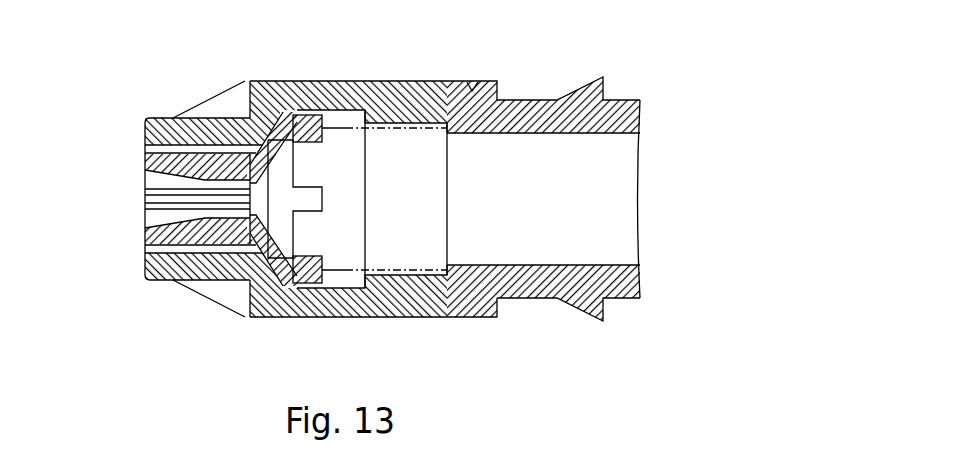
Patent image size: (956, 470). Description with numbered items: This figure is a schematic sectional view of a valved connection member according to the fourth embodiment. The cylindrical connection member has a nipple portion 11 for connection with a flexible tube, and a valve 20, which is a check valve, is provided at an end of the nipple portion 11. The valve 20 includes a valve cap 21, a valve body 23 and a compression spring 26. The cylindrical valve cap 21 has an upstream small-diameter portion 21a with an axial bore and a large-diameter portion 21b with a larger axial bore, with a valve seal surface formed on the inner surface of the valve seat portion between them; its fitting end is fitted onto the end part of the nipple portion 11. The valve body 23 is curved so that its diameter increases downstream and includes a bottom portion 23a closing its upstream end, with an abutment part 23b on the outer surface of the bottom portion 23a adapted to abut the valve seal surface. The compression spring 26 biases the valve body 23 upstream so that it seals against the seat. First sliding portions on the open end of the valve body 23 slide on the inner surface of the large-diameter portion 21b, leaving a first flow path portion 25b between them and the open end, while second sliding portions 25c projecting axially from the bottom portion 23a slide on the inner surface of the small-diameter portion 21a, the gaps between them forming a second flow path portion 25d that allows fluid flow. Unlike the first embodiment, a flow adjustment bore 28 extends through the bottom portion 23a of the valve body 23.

The nipple portion 11 is at (544, 100).
The valve 20 is at (218, 88).
The valve cap 21 is at (331, 80).
The small-diameter portion 21a is at (173, 117).
The large-diameter portion 21b is at (411, 81).
The valve body 23 is at (284, 112).
The bottom portion 23a is at (232, 249).
The abutment part 23b is at (245, 281).
The first flow path portion 25b is at (310, 245).
The second sliding portions 25c is at (145, 193).
The second flow path portion 25d is at (145, 227).
The compression spring 26 is at (340, 275).
The flow adjustment bore 28 is at (145, 209).